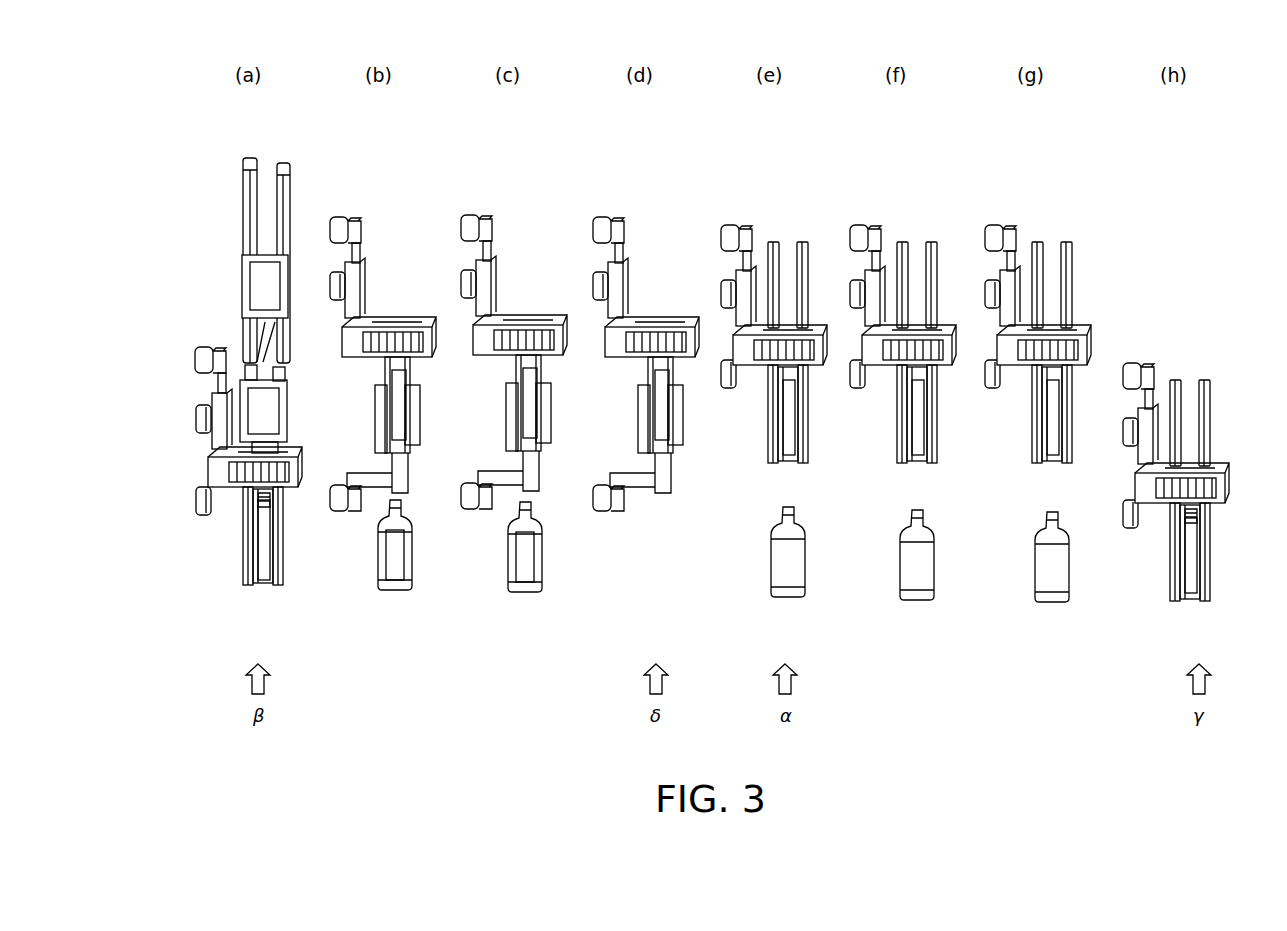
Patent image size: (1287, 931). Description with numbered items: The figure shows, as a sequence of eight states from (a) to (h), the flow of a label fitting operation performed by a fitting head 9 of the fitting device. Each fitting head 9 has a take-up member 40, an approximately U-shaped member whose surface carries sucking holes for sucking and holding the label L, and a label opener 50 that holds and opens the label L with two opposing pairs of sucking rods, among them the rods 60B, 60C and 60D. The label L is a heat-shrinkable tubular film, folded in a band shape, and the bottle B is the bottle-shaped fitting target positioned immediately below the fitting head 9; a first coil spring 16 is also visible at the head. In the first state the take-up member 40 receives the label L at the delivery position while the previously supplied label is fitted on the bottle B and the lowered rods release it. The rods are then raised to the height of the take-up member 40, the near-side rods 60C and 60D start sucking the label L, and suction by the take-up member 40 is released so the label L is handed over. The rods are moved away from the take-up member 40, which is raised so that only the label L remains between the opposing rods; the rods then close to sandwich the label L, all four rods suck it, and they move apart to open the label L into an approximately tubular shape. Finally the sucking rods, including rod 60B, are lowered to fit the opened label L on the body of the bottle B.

The fitting head 9 is at (195, 321).
The first coil spring 16 is at (232, 389).
The take-up member 40 is at (375, 432).
The label opener 50 is at (294, 525).
The sucking rod 60B is at (283, 538).
The sucking rod 60C is at (247, 590).
The sucking rod 60D is at (282, 590).
The label L is at (275, 284).
The bottle B is at (249, 528).